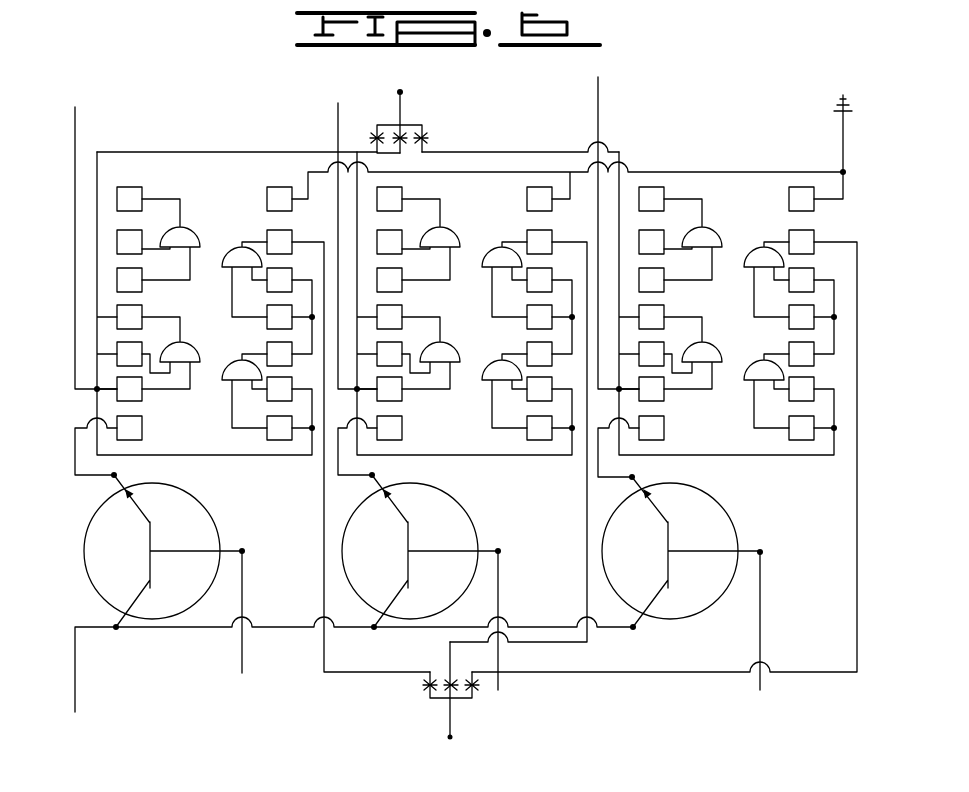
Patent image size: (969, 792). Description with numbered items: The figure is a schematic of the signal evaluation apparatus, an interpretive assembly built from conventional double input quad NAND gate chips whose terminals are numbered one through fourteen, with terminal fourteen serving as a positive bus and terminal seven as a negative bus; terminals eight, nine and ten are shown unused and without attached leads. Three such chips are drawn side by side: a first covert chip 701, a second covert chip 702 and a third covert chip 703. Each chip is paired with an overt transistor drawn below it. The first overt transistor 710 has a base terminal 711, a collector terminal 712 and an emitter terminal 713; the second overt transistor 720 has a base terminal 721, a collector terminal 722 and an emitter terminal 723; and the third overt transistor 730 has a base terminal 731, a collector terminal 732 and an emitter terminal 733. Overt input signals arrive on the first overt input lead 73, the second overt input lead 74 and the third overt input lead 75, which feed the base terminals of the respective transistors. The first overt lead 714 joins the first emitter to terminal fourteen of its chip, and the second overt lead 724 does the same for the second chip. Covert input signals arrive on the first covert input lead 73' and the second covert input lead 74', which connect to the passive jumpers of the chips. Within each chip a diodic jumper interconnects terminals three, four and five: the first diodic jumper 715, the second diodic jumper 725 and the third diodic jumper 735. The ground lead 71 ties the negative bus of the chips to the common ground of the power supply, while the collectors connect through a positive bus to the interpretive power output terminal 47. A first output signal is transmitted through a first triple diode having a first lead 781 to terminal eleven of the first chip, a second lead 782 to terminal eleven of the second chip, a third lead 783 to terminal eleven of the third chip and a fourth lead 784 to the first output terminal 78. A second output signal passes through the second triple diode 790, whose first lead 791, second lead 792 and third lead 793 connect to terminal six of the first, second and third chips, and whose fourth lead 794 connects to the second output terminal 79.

The first covert chip 701 is at (207, 190).
The second covert chip 702 is at (500, 204).
The third covert chip 703 is at (753, 205).
The first overt transistor 710 is at (137, 565).
The base terminal 711 is at (242, 551).
The collector terminal 712 is at (116, 627).
The emitter terminal 713 is at (114, 475).
The first overt lead 714 is at (122, 490).
The first diodic jumper 715 is at (312, 303).
The second overt transistor 720 is at (400, 565).
The base terminal 721 is at (498, 551).
The collector terminal 722 is at (374, 627).
The emitter terminal 723 is at (372, 475).
The second overt lead 724 is at (381, 491).
The second diodic jumper 725 is at (572, 303).
The third overt transistor 730 is at (658, 565).
The base terminal 731 is at (760, 552).
The collector terminal 732 is at (633, 627).
The emitter terminal 733 is at (632, 477).
The third diodic jumper 735 is at (834, 303).
The first covert input lead 73' is at (107, 248).
The second covert input lead 74' is at (322, 246).
The third overt input lead 75 is at (598, 102).
The first overt input lead 73 is at (257, 629).
The second overt input lead 74 is at (515, 633).
The interpretive power output terminal 47 is at (75, 686).
The ground lead 71 is at (843, 128).
The first output terminal 78 is at (400, 92).
The first lead 781 is at (160, 152).
The second lead 782 is at (376, 152).
The third lead 783 is at (489, 152).
The fourth lead 784 is at (400, 123).
The second output terminal 79 is at (452, 740).
The second triple diode 790 is at (490, 708).
The first lead 791 is at (380, 673).
The second lead 792 is at (465, 643).
The third lead 793 is at (670, 673).
The fourth lead 794 is at (448, 713).